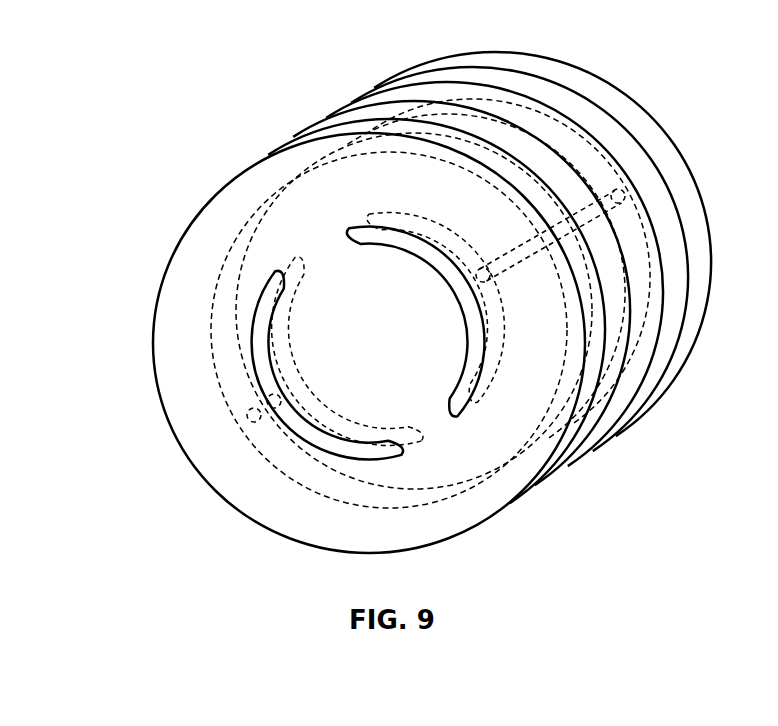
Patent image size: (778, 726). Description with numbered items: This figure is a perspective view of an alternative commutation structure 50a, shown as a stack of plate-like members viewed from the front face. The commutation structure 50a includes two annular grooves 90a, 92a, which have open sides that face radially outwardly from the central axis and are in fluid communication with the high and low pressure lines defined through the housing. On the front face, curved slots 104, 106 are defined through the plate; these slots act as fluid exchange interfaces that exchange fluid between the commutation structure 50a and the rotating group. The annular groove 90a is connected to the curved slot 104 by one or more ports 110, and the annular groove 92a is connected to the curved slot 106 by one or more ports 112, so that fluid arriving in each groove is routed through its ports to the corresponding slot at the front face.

The commutation structure 50a is at (163, 46).
The annular groove 90a is at (568, 140).
The annular groove 92a is at (232, 303).
The curved slot 104 is at (500, 377).
The curved slot 106 is at (306, 254).
The port 110 is at (525, 260).
The port 112 is at (258, 420).